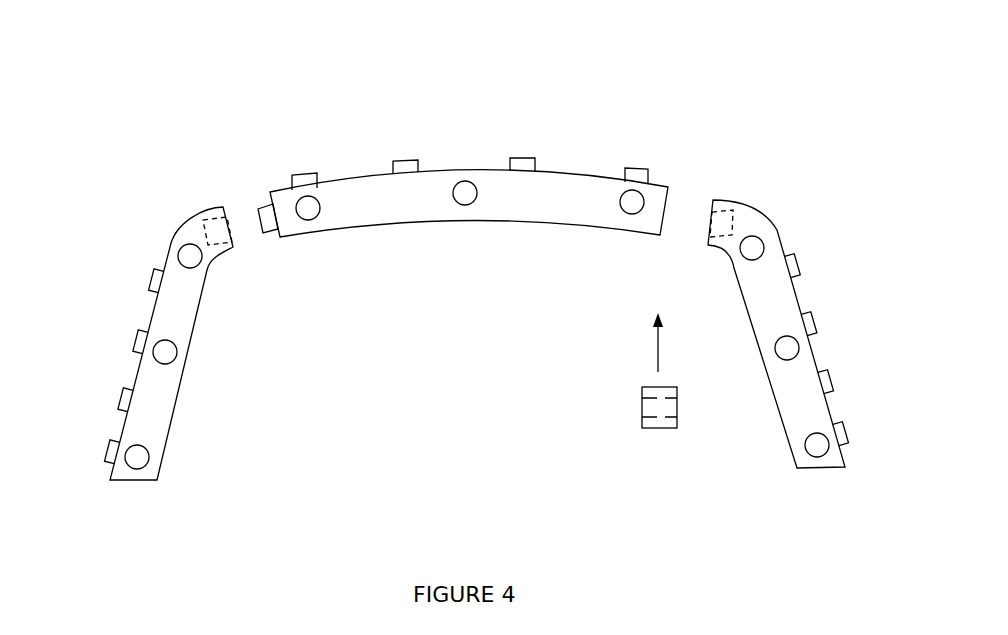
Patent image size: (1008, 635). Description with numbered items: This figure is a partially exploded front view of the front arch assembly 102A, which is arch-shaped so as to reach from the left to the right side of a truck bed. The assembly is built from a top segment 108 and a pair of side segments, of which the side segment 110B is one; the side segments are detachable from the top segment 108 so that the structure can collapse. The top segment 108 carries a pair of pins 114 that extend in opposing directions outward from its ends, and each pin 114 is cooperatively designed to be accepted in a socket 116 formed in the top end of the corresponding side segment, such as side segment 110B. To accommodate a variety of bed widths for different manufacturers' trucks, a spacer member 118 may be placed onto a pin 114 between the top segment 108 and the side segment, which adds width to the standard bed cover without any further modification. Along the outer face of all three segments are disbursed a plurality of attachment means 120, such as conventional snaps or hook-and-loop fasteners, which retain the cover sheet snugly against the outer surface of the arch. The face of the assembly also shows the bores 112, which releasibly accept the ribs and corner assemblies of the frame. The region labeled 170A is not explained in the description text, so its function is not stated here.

The front arch assembly 102A is at (703, 117).
The top segment 108 is at (435, 187).
The side segment 110B is at (762, 308).
The bores 112 is at (195, 365).
The pins 114 is at (258, 237).
The sockets 116 is at (240, 228).
The spacer members 118 is at (688, 447).
The attachment means 120 is at (130, 330).
The inner surface of side arm 170A is at (160, 398).